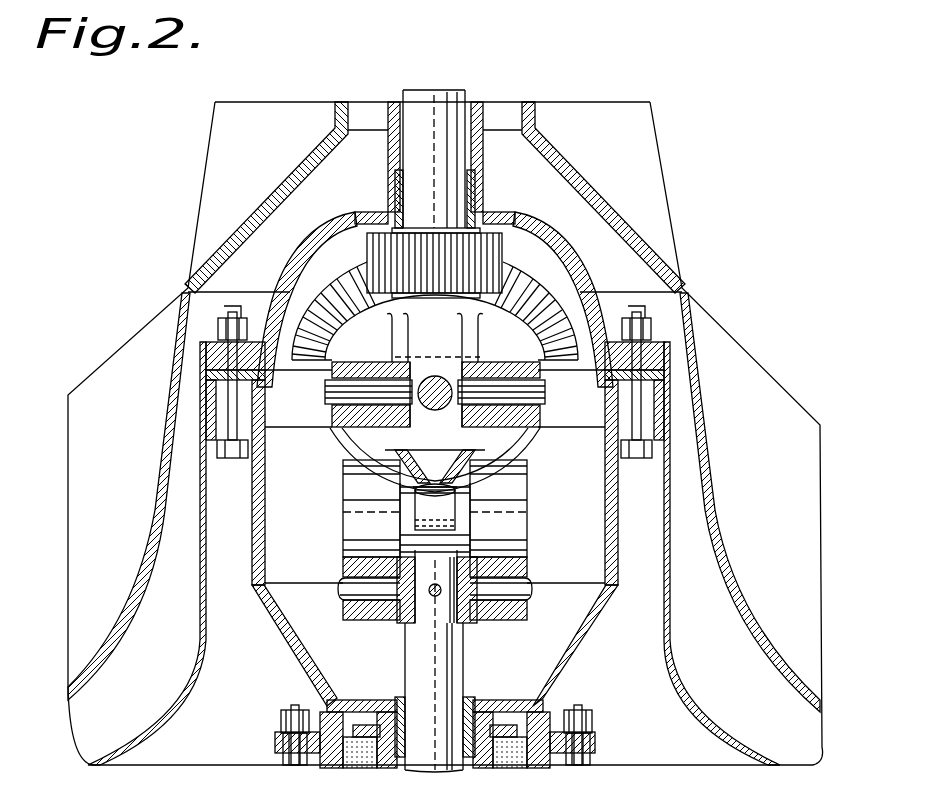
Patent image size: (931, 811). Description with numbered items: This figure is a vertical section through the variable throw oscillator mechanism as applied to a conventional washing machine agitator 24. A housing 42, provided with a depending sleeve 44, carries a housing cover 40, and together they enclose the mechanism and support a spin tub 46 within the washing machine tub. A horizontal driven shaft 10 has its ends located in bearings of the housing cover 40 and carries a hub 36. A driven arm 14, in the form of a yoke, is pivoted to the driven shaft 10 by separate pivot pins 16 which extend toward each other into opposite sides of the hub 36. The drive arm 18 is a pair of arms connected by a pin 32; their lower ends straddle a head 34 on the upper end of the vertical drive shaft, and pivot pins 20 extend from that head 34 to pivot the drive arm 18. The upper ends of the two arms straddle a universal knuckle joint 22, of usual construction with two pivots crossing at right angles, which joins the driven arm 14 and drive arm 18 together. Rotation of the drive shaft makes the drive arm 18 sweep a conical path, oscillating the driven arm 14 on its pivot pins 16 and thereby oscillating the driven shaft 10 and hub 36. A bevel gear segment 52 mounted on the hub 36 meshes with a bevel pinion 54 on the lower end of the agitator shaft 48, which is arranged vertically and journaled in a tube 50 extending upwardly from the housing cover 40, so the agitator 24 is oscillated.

The driven shaft 10 is at (437, 377).
The driven arm 14 is at (500, 443).
The pivot pins 16 is at (328, 388).
The drive arm 18 is at (356, 522).
The pivot pins 20 is at (345, 588).
The universal knuckle joint 22 is at (475, 502).
The washing machine agitator 24 is at (721, 419).
The pin 32 is at (410, 556).
The head 34 is at (400, 610).
The hub 36 is at (475, 463).
The housing cover 40 is at (482, 231).
The housing 42 is at (600, 606).
The depending sleeve 44 is at (390, 762).
The spin tub 46 is at (196, 652).
The agitator shaft 48 is at (455, 102).
The tube 50 is at (486, 134).
The bevel gear segment 52 is at (435, 312).
The bevel pinion 54 is at (500, 255).